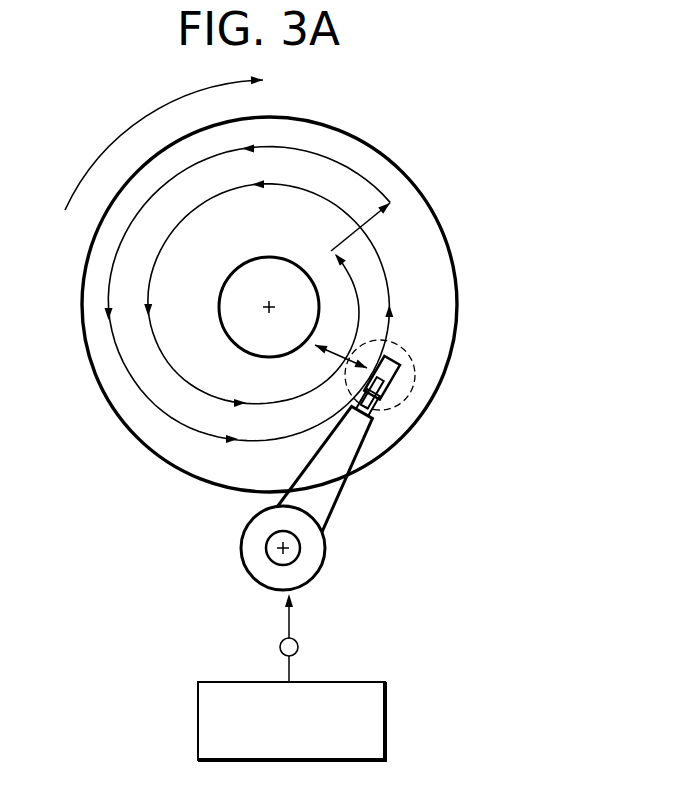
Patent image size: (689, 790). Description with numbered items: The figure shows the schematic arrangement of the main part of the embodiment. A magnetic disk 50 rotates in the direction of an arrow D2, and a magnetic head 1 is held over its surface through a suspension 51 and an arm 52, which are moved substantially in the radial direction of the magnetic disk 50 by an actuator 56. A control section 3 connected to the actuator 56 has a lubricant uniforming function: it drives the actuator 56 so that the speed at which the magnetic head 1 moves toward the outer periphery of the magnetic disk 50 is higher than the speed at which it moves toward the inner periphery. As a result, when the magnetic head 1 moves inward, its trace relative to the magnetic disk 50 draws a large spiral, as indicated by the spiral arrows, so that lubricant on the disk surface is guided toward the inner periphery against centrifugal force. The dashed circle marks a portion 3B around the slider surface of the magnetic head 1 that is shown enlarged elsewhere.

The magnetic head 1 is at (388, 383).
The control section 3 is at (386, 727).
The portion 3B is at (413, 358).
The magnetic disk 50 is at (180, 465).
The suspension 51 is at (382, 412).
The arm 52 is at (337, 500).
The actuator 56 is at (322, 565).
The arrow D2 is at (130, 128).